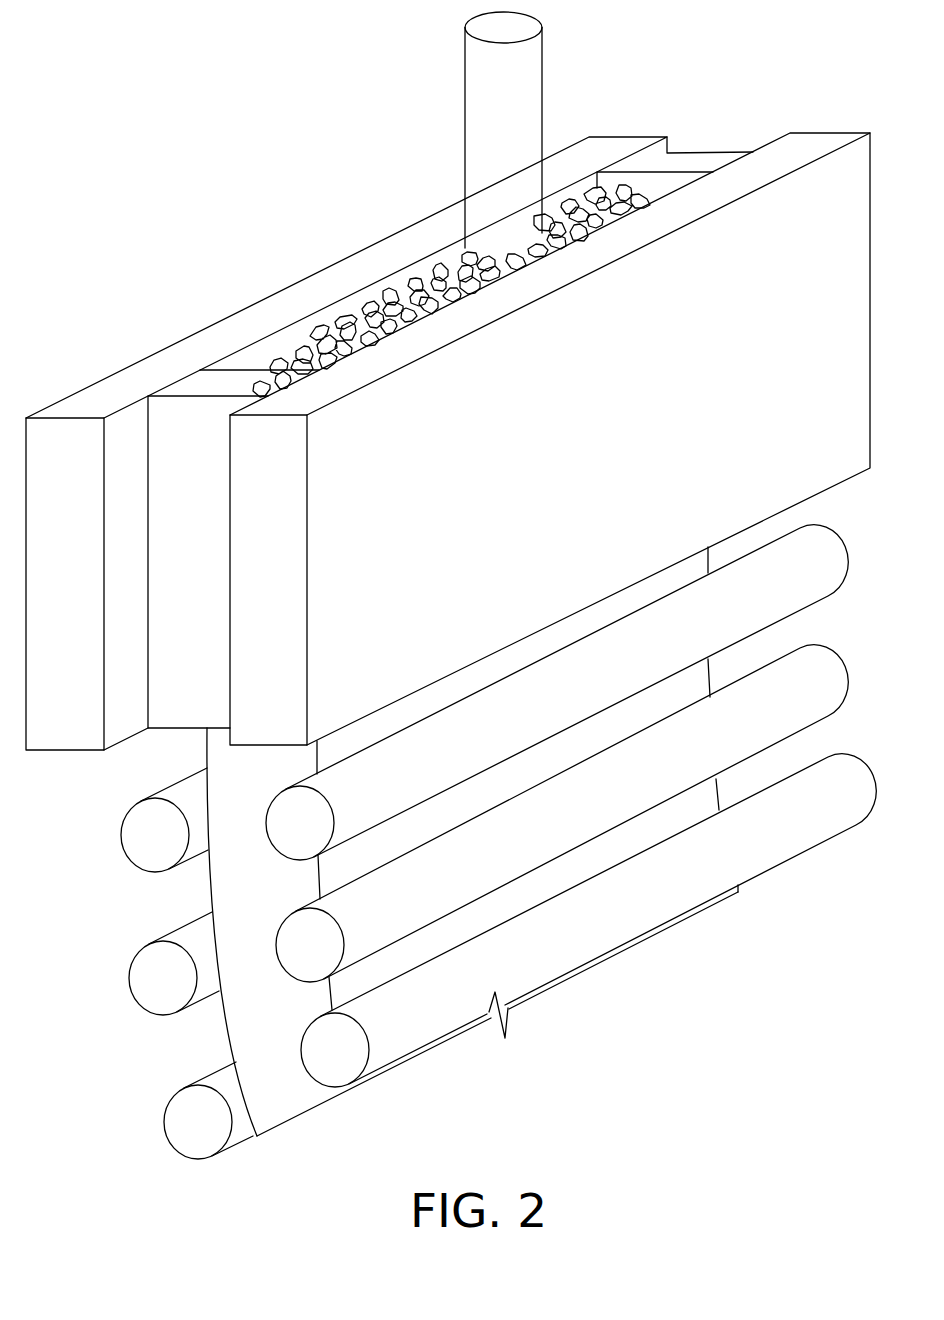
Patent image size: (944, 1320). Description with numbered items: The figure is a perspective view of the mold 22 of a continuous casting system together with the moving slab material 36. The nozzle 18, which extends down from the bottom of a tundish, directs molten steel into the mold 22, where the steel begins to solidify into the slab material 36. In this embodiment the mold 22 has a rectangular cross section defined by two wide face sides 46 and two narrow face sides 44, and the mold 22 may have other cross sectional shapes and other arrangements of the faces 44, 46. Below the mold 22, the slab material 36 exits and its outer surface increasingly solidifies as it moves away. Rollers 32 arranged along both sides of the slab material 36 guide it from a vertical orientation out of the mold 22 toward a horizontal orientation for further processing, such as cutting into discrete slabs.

The mold 22 is at (240, 62).
The nozzle 18 is at (484, 127).
The wide face sides 46 is at (226, 333).
The narrow face sides 44 is at (188, 390).
The slab material 36 is at (194, 885).
The rollers 32 is at (158, 990).